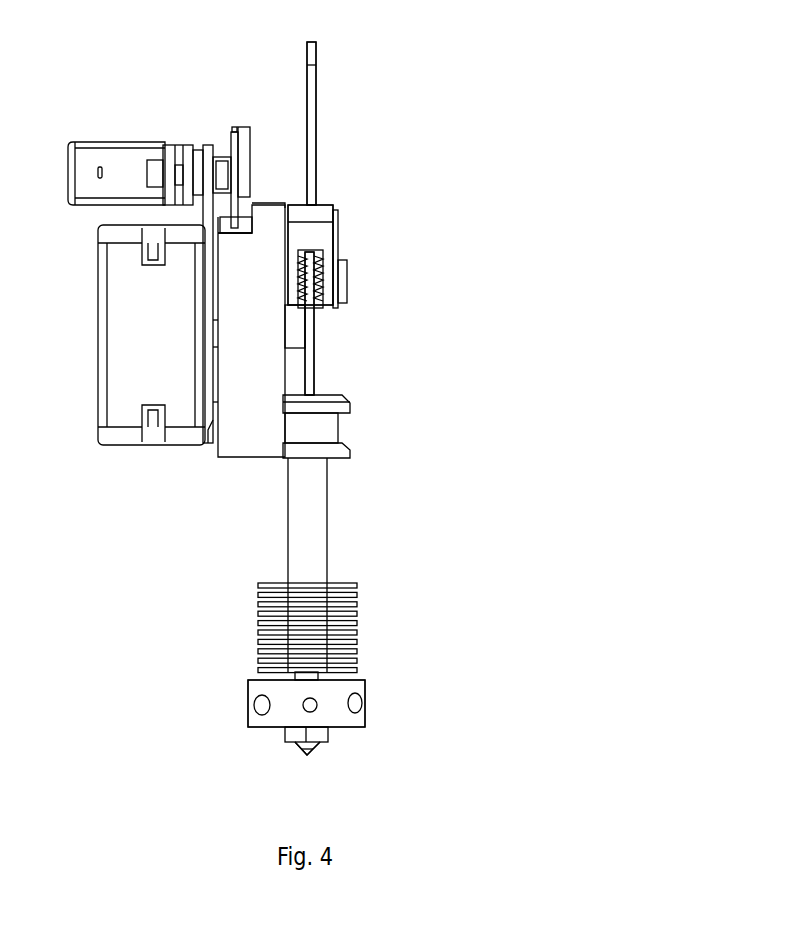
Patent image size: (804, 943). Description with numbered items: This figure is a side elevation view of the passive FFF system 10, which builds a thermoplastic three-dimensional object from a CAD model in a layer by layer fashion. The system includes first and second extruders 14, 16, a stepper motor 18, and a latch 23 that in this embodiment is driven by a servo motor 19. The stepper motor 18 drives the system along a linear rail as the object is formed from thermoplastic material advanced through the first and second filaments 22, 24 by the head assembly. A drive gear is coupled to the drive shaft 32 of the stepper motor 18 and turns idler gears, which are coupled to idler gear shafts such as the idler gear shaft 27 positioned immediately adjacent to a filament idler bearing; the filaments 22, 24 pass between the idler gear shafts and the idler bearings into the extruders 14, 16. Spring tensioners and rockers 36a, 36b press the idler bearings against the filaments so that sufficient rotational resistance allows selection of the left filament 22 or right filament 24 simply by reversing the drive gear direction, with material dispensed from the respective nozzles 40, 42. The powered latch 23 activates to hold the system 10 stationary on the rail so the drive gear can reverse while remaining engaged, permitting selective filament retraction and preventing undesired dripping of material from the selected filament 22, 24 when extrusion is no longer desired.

The passive FFF system 10 is at (585, 337).
The first extruder 14 is at (306, 703).
The second extruder 16 is at (358, 710).
The stepper motor 18 is at (118, 408).
The servo motor 19 is at (133, 142).
The first filament 22 is at (313, 138).
The latch 23 is at (235, 140).
The second filament 24 is at (310, 218).
The idler gear shaft 27 is at (320, 282).
The drive shaft 32 is at (300, 341).
The rocker 36a is at (325, 237).
The rocker 36b is at (310, 255).
The extruder nozzle 40 is at (315, 748).
The extruder nozzle 42 is at (307, 748).